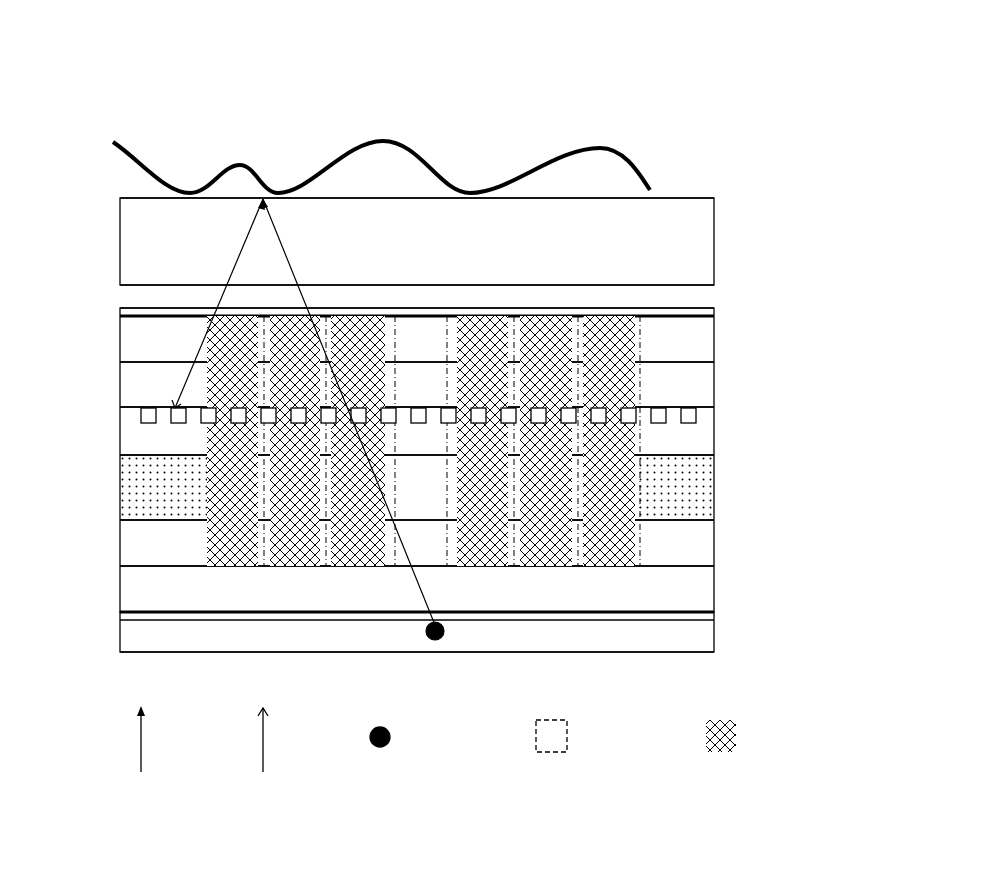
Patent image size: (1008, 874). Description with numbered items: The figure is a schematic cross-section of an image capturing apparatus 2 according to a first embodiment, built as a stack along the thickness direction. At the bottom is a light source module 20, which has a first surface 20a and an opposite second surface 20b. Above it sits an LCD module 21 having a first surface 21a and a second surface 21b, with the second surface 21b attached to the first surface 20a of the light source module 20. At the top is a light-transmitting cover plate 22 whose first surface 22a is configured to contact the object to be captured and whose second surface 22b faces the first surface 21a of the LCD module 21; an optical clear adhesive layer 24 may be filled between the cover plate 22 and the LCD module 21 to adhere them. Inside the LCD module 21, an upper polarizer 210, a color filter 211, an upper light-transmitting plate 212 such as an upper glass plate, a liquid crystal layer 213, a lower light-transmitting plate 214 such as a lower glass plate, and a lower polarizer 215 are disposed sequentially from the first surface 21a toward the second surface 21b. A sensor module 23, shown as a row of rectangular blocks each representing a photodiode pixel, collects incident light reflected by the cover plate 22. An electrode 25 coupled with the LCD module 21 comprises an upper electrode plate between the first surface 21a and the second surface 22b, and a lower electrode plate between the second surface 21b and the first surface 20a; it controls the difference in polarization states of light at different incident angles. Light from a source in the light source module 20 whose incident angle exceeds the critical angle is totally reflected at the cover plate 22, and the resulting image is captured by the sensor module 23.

The image capturing apparatus 2 is at (466, 438).
The light-transmitting cover plate 22 is at (715, 240).
The first surface of the light-transmitting cover plate 22a is at (140, 193).
The second surface of the light-transmitting cover plate 22b is at (134, 288).
The optical clear adhesive layer 24 is at (165, 296).
The electrode 25 is at (715, 312).
The LCD module 21 is at (466, 461).
The first surface of the LCD module 21a is at (134, 319).
The second surface of the LCD module 21b is at (137, 618).
The upper polarizer 210 is at (715, 332).
The color filter 211 is at (715, 380).
The upper light-transmitting plate 212 is at (715, 425).
The liquid crystal layer 213 is at (715, 488).
The lower light-transmitting plate 214 is at (715, 547).
The lower polarizer 215 is at (715, 600).
The sensor module 23 is at (140, 416).
The light source module 20 is at (715, 643).
The first surface of the light source module 20a is at (156, 613).
The second surface of the light source module 20b is at (137, 657).